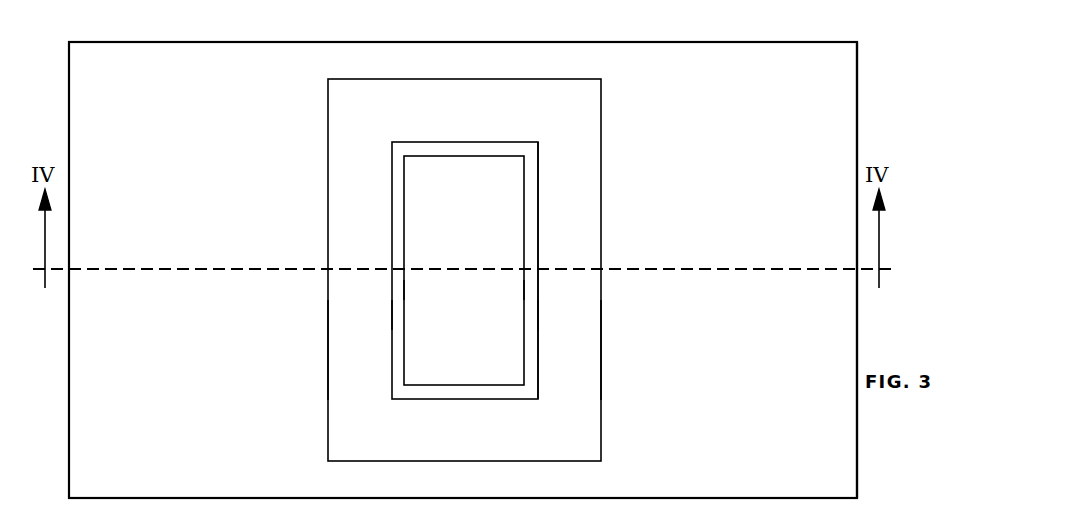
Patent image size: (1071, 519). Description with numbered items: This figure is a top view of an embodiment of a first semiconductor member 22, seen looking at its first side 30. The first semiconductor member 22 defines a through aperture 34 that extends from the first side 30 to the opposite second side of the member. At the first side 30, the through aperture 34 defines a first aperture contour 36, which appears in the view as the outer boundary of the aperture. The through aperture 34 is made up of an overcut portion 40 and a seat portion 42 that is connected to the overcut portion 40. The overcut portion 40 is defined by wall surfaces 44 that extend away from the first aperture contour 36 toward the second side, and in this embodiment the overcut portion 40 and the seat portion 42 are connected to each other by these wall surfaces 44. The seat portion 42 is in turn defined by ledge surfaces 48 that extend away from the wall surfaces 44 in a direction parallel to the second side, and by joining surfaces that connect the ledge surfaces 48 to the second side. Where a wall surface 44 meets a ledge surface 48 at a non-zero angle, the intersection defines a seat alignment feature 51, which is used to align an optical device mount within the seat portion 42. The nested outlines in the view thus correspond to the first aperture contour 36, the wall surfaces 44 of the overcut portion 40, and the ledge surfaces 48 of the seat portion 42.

The first semiconductor member 22 is at (132, 42).
The first side 30 is at (848, 22).
The through aperture 34 is at (417, 184).
The first aperture contour 36 is at (601, 163).
The overcut portion 40 is at (338, 231).
The seat portion 42 is at (532, 233).
The wall surfaces 44 is at (343, 355).
The ledge surfaces 48 is at (527, 292).
The seat alignment feature 51 is at (391, 317).